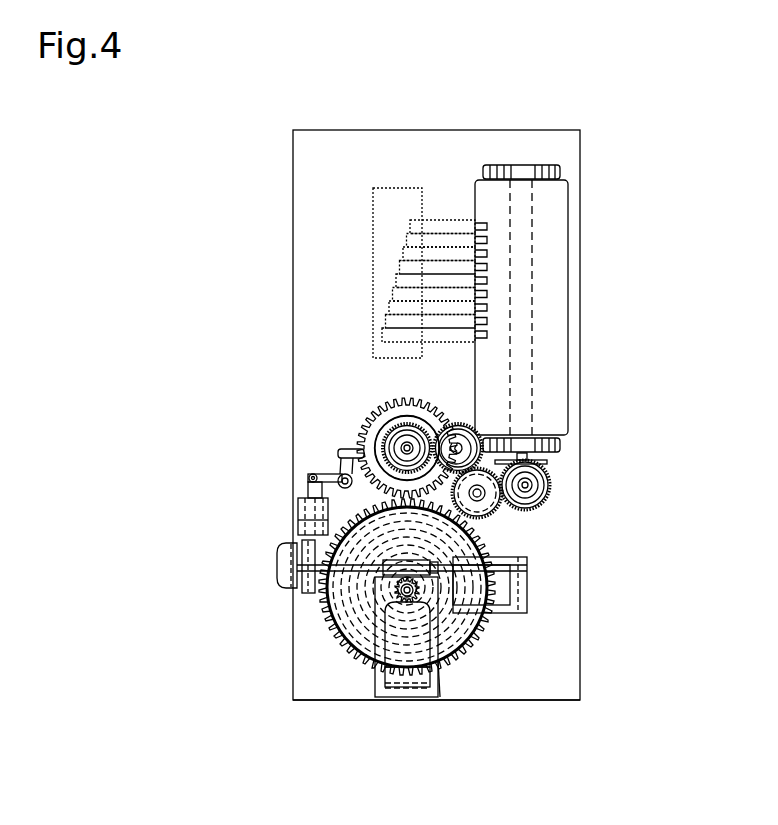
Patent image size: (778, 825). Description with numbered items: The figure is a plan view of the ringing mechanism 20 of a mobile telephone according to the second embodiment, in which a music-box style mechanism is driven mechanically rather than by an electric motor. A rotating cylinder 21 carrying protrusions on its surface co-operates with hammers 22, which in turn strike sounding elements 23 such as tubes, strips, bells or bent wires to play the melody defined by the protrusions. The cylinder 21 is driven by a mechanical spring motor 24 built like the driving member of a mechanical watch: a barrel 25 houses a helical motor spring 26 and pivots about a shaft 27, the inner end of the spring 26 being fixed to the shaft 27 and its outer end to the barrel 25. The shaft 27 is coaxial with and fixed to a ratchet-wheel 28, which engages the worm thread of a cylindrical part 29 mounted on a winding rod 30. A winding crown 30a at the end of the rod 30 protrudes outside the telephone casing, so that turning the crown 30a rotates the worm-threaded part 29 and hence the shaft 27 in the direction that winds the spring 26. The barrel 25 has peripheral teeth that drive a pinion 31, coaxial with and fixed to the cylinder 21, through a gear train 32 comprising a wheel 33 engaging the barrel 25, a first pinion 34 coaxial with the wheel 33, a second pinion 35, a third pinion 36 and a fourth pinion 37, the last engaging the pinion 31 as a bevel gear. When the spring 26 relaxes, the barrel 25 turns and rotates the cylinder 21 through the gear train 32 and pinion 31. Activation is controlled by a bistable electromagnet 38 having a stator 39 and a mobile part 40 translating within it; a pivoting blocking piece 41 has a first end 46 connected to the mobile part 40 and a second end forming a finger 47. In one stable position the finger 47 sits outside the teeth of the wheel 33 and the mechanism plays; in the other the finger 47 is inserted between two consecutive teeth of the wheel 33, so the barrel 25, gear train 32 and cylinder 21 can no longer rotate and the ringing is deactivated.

The ringing mechanism 20 is at (276, 325).
The rotating cylinder 21 is at (552, 253).
The hammers 22 is at (440, 220).
The sounding elements 23 is at (390, 233).
The mechanical spring motor 24 is at (548, 632).
The barrel 25 is at (467, 655).
The helical motor spring 26 is at (470, 637).
The shaft 27 is at (373, 648).
The ratchet-wheel 28 is at (412, 602).
The cylindrical part with a worm thread 29 is at (440, 557).
The winding rod 30 is at (330, 603).
The winding crown 30a is at (287, 566).
The pinion 31 is at (548, 462).
The gear train 32 is at (377, 398).
The wheel 33 is at (372, 413).
The first pinion 34 is at (430, 433).
The second pinion 35 is at (467, 428).
The third pinion 36 is at (493, 517).
The fourth pinion 37 is at (552, 487).
The bistable electromagnet 38 is at (297, 527).
The stator 39 is at (298, 508).
The mobile part 40 is at (308, 490).
The pivoting blocking piece 41 is at (310, 474).
The first end 46 is at (324, 477).
The finger 47 is at (335, 448).